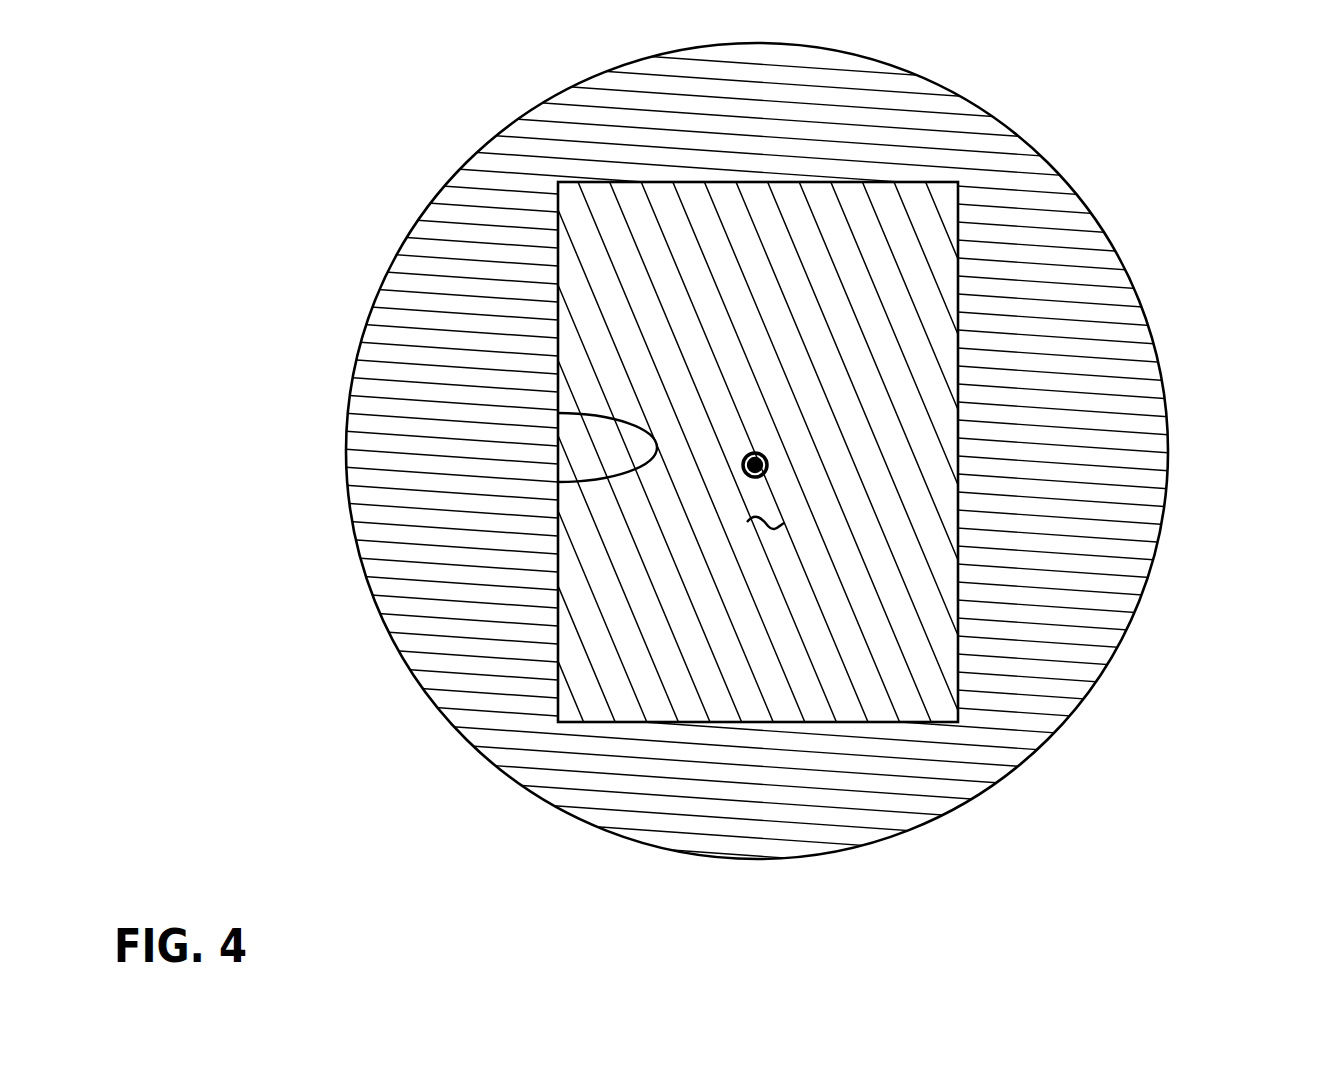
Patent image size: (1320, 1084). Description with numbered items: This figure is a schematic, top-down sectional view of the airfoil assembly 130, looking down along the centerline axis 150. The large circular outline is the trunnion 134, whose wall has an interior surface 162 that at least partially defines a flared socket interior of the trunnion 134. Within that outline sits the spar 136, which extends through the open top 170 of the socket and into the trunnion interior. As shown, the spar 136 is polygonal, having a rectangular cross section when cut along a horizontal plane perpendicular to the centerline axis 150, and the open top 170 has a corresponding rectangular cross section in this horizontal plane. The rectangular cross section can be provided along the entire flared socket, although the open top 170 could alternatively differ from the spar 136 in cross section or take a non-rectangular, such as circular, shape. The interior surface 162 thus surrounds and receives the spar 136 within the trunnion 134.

The cross-sectional assembly 130 is at (404, 109).
The trunnion 134 is at (1153, 332).
The spar 136 is at (960, 250).
The centerline axis 150 is at (769, 463).
The interior surface 162 is at (558, 482).
The open top 170 is at (763, 526).